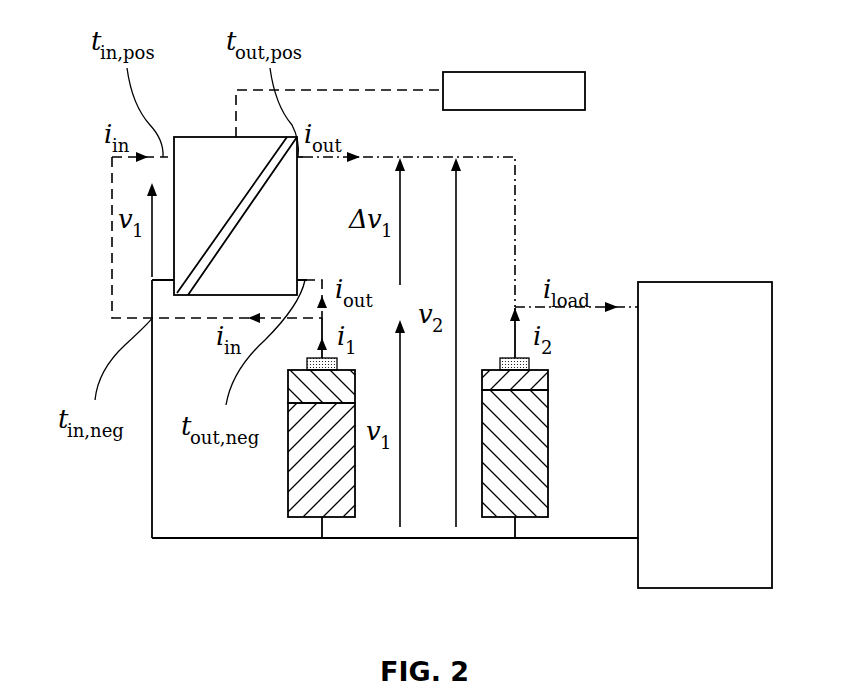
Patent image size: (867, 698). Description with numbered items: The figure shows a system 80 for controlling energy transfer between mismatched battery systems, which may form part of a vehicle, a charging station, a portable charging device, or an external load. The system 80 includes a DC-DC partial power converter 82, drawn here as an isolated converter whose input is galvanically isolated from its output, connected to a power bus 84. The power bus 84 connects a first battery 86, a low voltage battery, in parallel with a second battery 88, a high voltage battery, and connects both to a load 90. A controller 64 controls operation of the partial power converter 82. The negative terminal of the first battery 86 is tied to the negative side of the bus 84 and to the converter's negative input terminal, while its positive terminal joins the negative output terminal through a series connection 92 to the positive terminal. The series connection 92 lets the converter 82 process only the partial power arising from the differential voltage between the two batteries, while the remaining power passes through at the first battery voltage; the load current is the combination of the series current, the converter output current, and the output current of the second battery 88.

The system 80 is at (735, 34).
The partial power converter 82 is at (210, 148).
The power bus 84 is at (406, 540).
The first battery 86 is at (302, 472).
The second battery 88 is at (540, 474).
The load 90 is at (705, 282).
The series connection 92 is at (112, 230).
The controller 64 is at (588, 90).